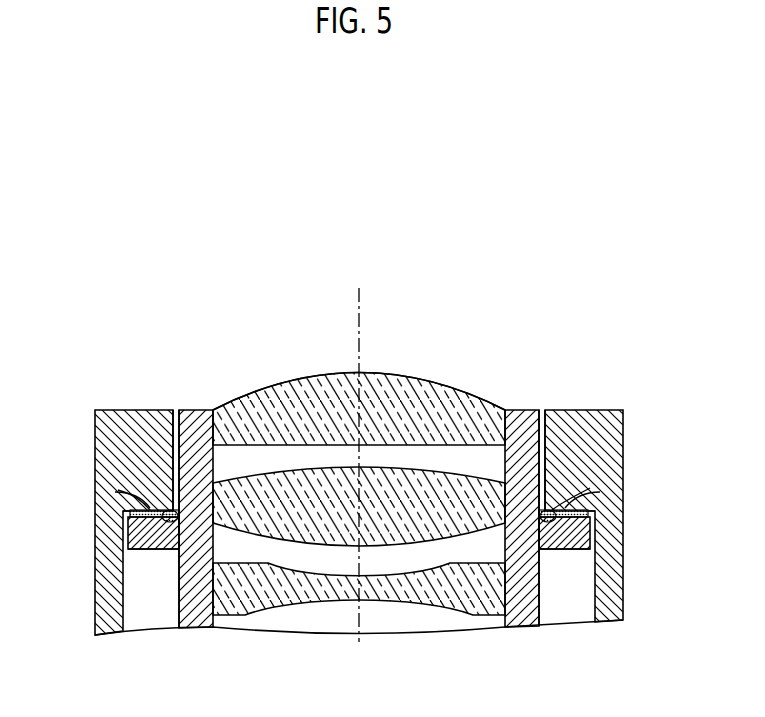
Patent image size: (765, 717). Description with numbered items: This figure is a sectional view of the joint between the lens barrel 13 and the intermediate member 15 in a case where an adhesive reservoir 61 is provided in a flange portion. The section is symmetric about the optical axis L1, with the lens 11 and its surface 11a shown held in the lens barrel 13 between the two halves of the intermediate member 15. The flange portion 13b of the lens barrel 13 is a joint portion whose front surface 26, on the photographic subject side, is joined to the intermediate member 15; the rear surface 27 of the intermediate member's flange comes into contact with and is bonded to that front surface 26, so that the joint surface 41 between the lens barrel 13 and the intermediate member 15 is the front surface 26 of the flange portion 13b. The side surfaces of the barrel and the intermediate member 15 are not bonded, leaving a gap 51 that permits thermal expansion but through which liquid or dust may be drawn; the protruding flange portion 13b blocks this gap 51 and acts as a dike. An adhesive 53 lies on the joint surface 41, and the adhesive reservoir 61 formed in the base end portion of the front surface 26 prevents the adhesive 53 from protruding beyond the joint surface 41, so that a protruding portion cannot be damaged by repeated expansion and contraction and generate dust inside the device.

The first lens 11 is at (428, 400).
The lens surface 11a is at (385, 372).
The lens barrel 13 is at (197, 420).
The flange portion 13b is at (143, 549).
The intermediate member 15 is at (131, 418).
The front surface 26 is at (128, 530).
The rear surface 27 is at (115, 492).
The joint surface 41 is at (131, 513).
The gap 51 is at (177, 410).
The adhesive 53 is at (118, 490).
The adhesive reservoir 61 is at (171, 518).
The optical axis L1 is at (358, 298).